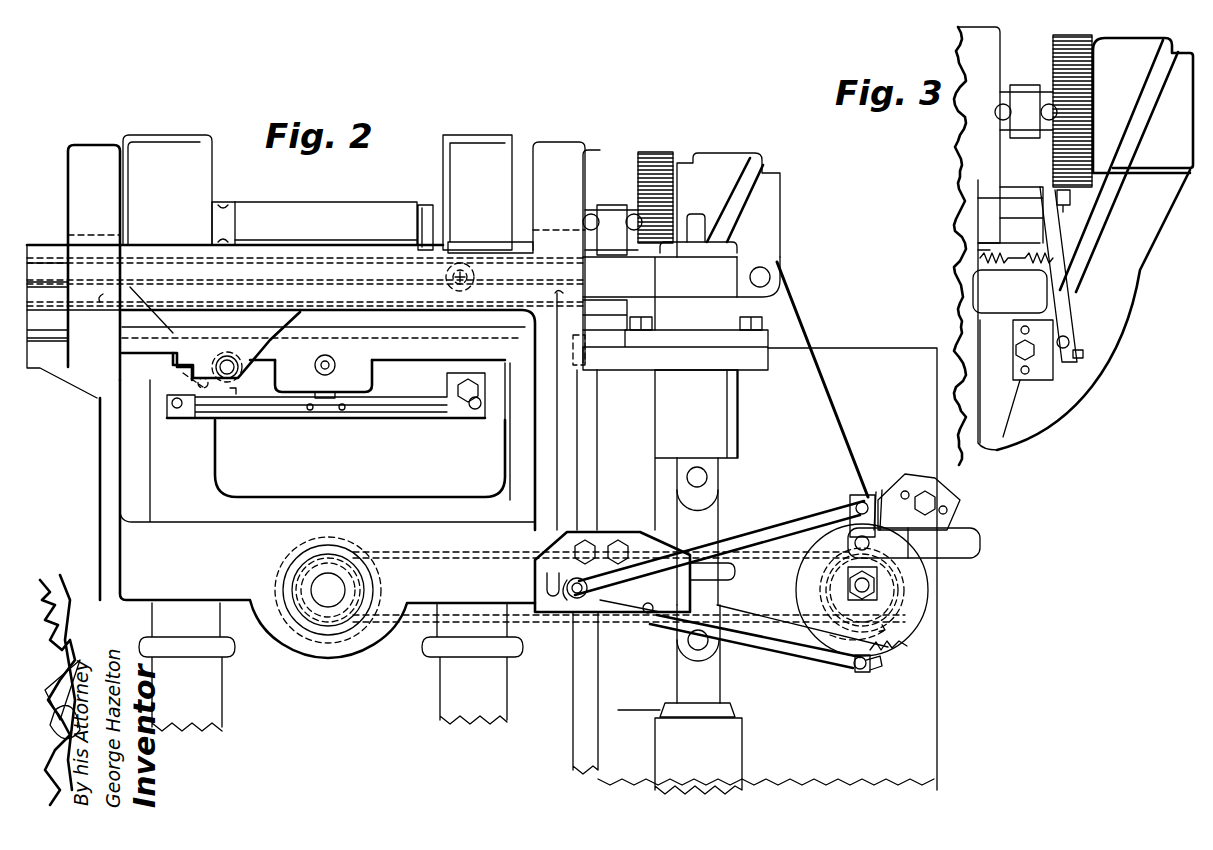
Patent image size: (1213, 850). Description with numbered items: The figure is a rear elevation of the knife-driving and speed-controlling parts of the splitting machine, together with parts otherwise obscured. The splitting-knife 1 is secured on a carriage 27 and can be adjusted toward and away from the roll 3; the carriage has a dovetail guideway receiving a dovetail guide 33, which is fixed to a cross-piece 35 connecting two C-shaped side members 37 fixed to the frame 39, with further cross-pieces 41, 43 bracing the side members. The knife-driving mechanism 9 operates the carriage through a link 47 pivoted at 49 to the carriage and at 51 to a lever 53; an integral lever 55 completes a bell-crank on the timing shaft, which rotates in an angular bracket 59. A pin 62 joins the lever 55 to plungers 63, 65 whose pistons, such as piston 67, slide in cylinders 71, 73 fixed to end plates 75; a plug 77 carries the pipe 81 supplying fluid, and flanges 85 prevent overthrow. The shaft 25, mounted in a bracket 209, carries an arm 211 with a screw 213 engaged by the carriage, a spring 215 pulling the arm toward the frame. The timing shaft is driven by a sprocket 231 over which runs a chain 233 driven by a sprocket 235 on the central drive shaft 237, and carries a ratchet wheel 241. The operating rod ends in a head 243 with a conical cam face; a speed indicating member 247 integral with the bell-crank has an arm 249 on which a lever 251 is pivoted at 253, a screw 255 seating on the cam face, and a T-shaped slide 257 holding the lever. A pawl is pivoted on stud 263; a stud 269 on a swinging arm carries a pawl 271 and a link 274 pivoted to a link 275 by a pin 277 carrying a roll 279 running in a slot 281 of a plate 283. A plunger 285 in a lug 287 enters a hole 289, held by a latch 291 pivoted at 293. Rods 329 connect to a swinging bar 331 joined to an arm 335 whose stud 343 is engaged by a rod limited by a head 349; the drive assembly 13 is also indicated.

In FIG. 2, the splitting-knife 1 is at (47, 272).
In FIG. 2, the roll 3 is at (358, 210).
In FIG. 2, the knife-driving mechanism 9 is at (845, 384).
In FIG. 2, the drive assembly 13 is at (955, 612).
In FIG. 3, the shaft 25 is at (1067, 342).
In FIG. 2, the carriage 27 is at (428, 318).
In FIG. 2, the dovetail guide 33 is at (618, 310).
In FIG. 3, the dovetail guide 33 is at (1010, 198).
In FIG. 2, the cross-piece 35 is at (513, 352).
In FIG. 3, the cross-piece 35 is at (1012, 230).
In FIG. 2, the C-shaped side member 37 is at (75, 162).
In FIG. 2, the frame 39 is at (220, 493).
In FIG. 3, the frame 39 is at (977, 258).
In FIG. 2, the cross-piece 41 is at (143, 597).
In FIG. 2, the cross-piece 43 is at (170, 260).
In FIG. 2, the link 47 is at (597, 277).
In FIG. 2, the pivot 49 is at (462, 276).
In FIG. 2, the pivot 51 is at (762, 277).
In FIG. 2, the lever 53 is at (846, 434).
In FIG. 2, the lever 55 is at (742, 647).
In FIG. 2, the angular bracket 59 is at (600, 693).
In FIG. 2, the pin 62 is at (693, 642).
In FIG. 2, the plunger 63 is at (683, 512).
In FIG. 2, the plunger 65 is at (712, 688).
In FIG. 2, the piston 67 is at (678, 468).
In FIG. 2, the cylinder 71 is at (733, 443).
In FIG. 2, the cylinder 73 is at (733, 743).
In FIG. 2, the end plate 75 is at (762, 358).
In FIG. 2, the plug 77 is at (723, 246).
In FIG. 2, the pipe 81 is at (695, 222).
In FIG. 2, the flange 85 is at (735, 575).
In FIG. 3, the bracket 209 is at (1047, 367).
In FIG. 3, the arm 211 is at (1048, 247).
In FIG. 3, the screw 213 is at (1067, 198).
In FIG. 3, the spring 215 is at (1023, 270).
In FIG. 2, the sprocket 231 is at (827, 597).
In FIG. 2, the chain 233 is at (450, 560).
In FIG. 2, the sprocket 235 is at (363, 589).
In FIG. 2, the central drive shaft 237 is at (330, 598).
In FIG. 2, the ratchet wheel 241 is at (890, 647).
In FIG. 2, the head 243 is at (872, 600).
In FIG. 2, the speed indicating member 247 is at (950, 502).
In FIG. 2, the arm 249 is at (893, 553).
In FIG. 2, the lever 251 is at (857, 520).
In FIG. 2, the pivot 253 is at (830, 545).
In FIG. 2, the screw 255 is at (880, 583).
In FIG. 2, the T-shaped slide 257 is at (885, 485).
In FIG. 2, the stud 263 is at (860, 504).
In FIG. 2, the stud 269 is at (862, 670).
In FIG. 2, the pawl 271 is at (877, 667).
In FIG. 2, the link 274 is at (812, 650).
In FIG. 2, the link 275 is at (733, 540).
In FIG. 2, the pin 277 is at (580, 598).
In FIG. 2, the roll 279 is at (567, 594).
In FIG. 2, the slot 281 is at (648, 617).
In FIG. 2, the plate 283 is at (540, 597).
In FIG. 2, the plunger 285 is at (242, 383).
In FIG. 2, the lug 287 is at (173, 360).
In FIG. 2, the hole 289 is at (338, 364).
In FIG. 2, the spring-actuated latch 291 is at (233, 393).
In FIG. 2, the pivot 293 is at (193, 408).
In FIG. 2, the rod 329 is at (455, 400).
In FIG. 2, the swinging bar 331 is at (405, 407).
In FIG. 2, the arm 335 is at (318, 367).
In FIG. 2, the stud 343 is at (330, 368).
In FIG. 2, the head 349 is at (218, 362).